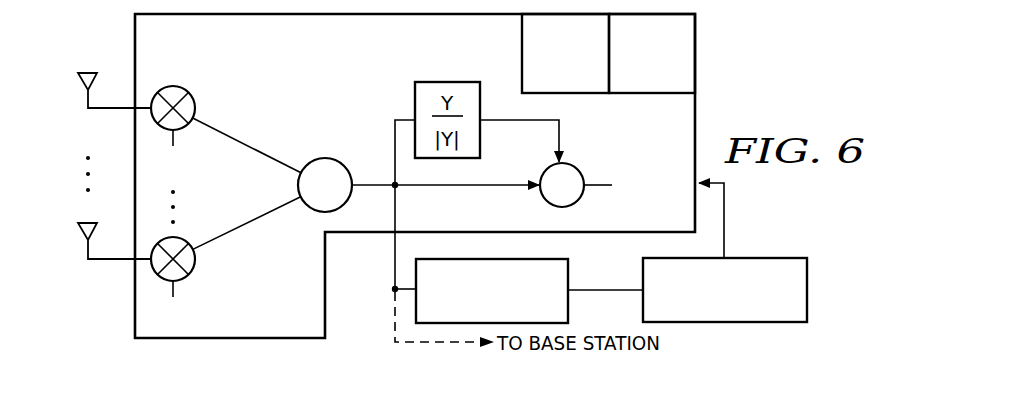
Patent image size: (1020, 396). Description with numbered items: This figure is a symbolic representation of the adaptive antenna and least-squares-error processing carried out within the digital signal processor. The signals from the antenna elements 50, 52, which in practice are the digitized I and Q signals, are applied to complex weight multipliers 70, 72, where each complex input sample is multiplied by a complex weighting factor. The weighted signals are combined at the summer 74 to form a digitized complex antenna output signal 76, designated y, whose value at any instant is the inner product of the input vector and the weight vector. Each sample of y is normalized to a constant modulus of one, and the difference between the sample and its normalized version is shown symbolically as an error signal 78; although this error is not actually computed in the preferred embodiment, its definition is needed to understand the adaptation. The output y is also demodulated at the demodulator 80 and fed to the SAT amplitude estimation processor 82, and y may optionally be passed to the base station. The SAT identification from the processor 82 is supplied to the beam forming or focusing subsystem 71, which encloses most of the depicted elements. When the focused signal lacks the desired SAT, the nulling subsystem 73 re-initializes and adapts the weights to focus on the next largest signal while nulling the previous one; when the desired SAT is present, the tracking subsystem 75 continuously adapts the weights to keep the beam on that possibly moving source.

The antenna element 50 is at (80, 100).
The antenna element 52 is at (80, 248).
The complex weight multiplier 70 is at (196, 104).
The complex weight multiplier 72 is at (196, 264).
The focusing subsystem 71 is at (199, 53).
The nulling subsystem 73 is at (522, 50).
The tracking subsystem 75 is at (697, 49).
The summer 74 is at (325, 158).
The digitized complex antenna output signal 76 is at (378, 183).
The error signal 78 is at (582, 170).
The demodulator 80 is at (570, 273).
The SAT amplitude estimation processor 82 is at (808, 291).